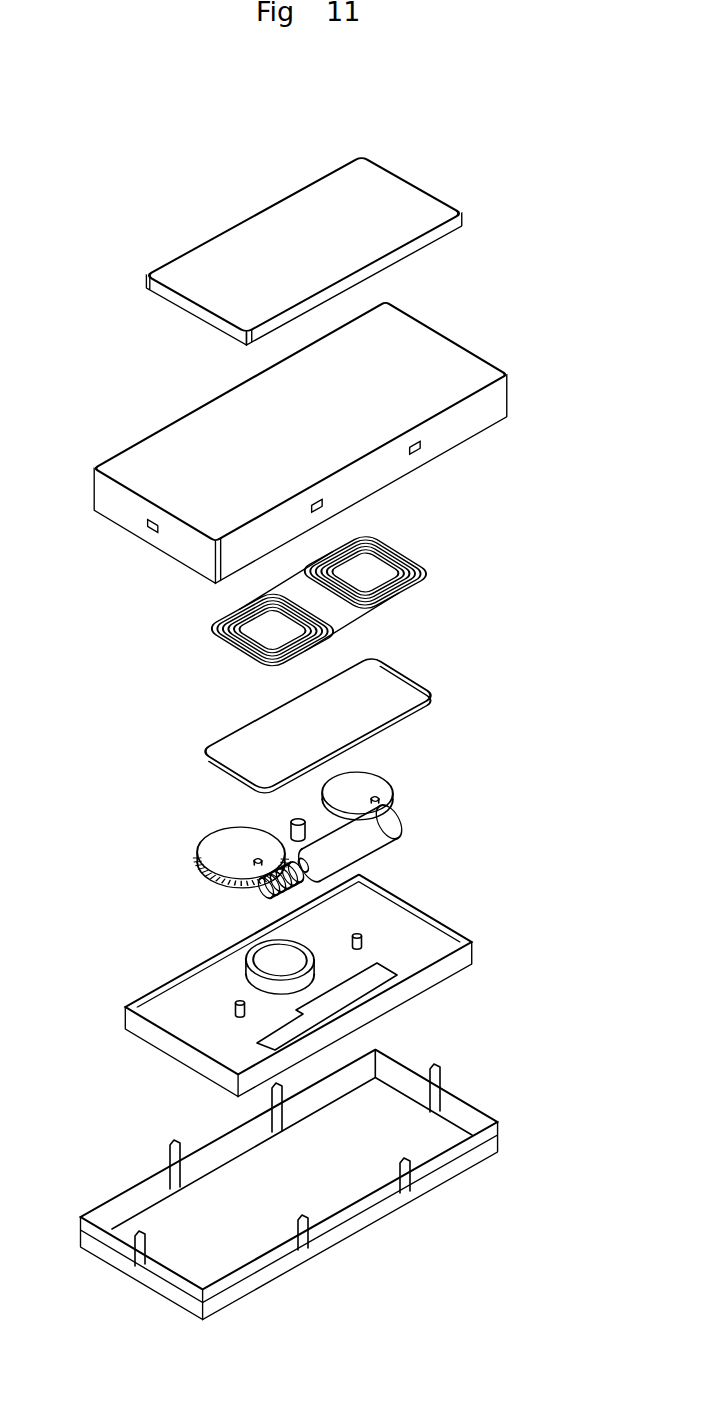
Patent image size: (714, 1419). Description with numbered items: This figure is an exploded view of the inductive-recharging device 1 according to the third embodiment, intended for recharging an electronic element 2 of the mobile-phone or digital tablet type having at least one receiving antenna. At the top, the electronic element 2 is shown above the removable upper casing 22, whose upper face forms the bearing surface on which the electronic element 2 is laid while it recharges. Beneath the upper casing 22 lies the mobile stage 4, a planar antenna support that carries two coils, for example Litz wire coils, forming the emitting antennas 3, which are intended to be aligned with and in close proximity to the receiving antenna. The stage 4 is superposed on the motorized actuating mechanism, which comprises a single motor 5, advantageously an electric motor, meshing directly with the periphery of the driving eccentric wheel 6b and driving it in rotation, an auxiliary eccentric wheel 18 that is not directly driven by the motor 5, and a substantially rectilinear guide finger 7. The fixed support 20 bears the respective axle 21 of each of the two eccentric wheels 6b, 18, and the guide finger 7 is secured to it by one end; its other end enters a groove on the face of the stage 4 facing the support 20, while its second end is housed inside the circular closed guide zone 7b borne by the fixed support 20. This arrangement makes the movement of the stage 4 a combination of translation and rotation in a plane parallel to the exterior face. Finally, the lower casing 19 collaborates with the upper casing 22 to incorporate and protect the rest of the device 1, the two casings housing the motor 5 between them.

The inductive-recharging device 1 is at (138, 689).
The electronic element 2 is at (273, 222).
The upper casing 22 is at (135, 455).
The emitting antenna 3 is at (366, 621).
The stage 4 is at (403, 690).
The auxiliary eccentric wheel 18 is at (357, 787).
The guide finger 7 is at (292, 830).
The motor 5 is at (382, 823).
The driving eccentric wheel 6b is at (217, 858).
The fixed support 20 is at (324, 979).
The axle 21 is at (357, 938).
The circular closed guide zone 7b is at (315, 972).
The lower casing 19 is at (415, 1143).